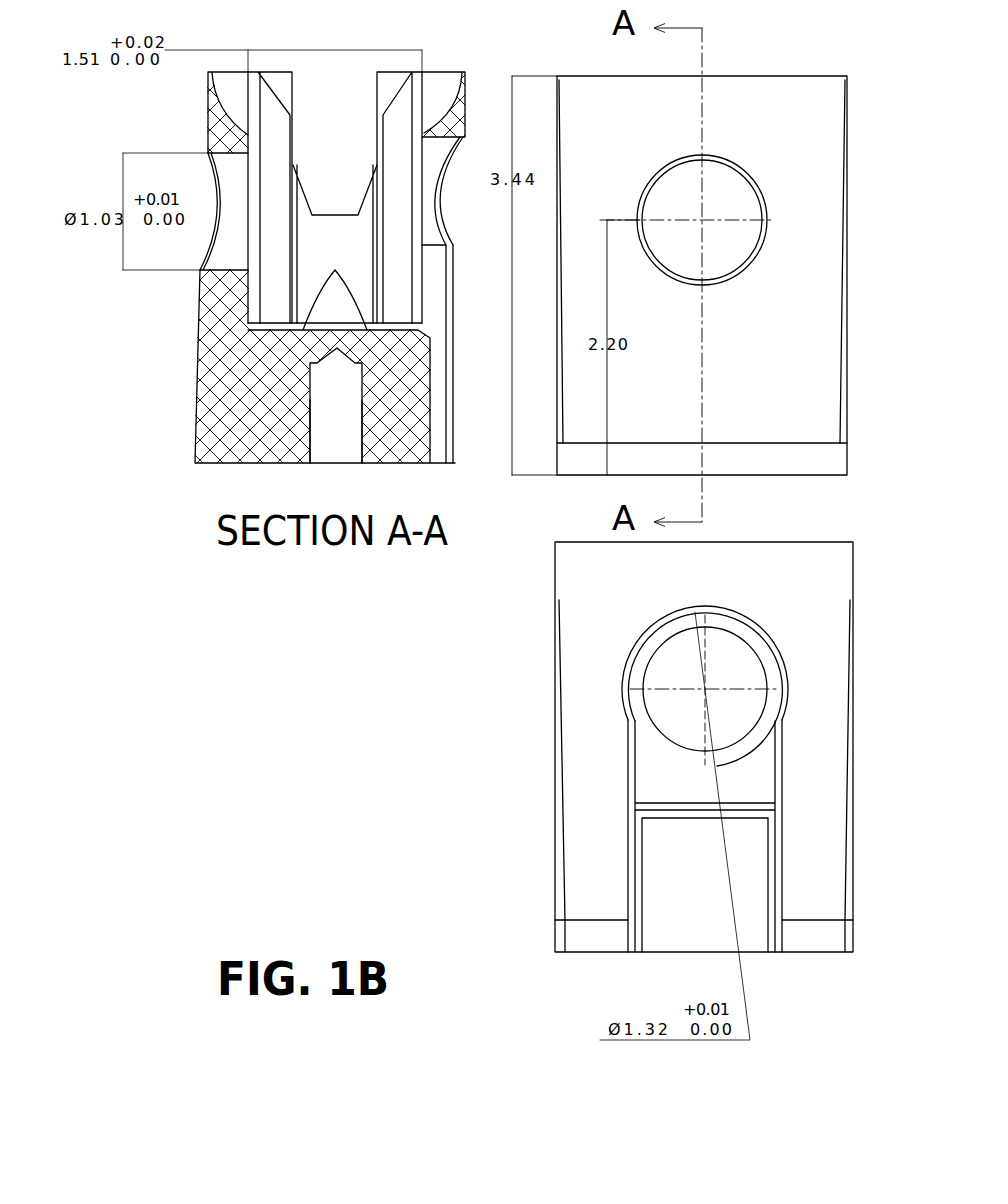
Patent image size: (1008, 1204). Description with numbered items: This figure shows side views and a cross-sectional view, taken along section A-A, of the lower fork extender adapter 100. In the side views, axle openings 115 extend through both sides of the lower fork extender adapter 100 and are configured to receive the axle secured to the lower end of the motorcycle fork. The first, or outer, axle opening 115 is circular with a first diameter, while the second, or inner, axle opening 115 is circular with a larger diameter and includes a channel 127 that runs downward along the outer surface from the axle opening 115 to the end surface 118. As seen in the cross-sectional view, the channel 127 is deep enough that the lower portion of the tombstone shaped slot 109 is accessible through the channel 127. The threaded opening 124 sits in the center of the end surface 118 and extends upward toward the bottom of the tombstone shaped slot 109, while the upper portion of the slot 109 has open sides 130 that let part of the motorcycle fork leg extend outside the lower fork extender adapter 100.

The lower fork extender adapter 100 is at (596, 55).
The tombstone shaped slot 109 is at (355, 253).
The axle opening 115 is at (195, 260).
The end surface 118 is at (229, 466).
The threaded opening 124 is at (336, 465).
The channel 127 is at (450, 384).
The open sides 130 is at (336, 85).